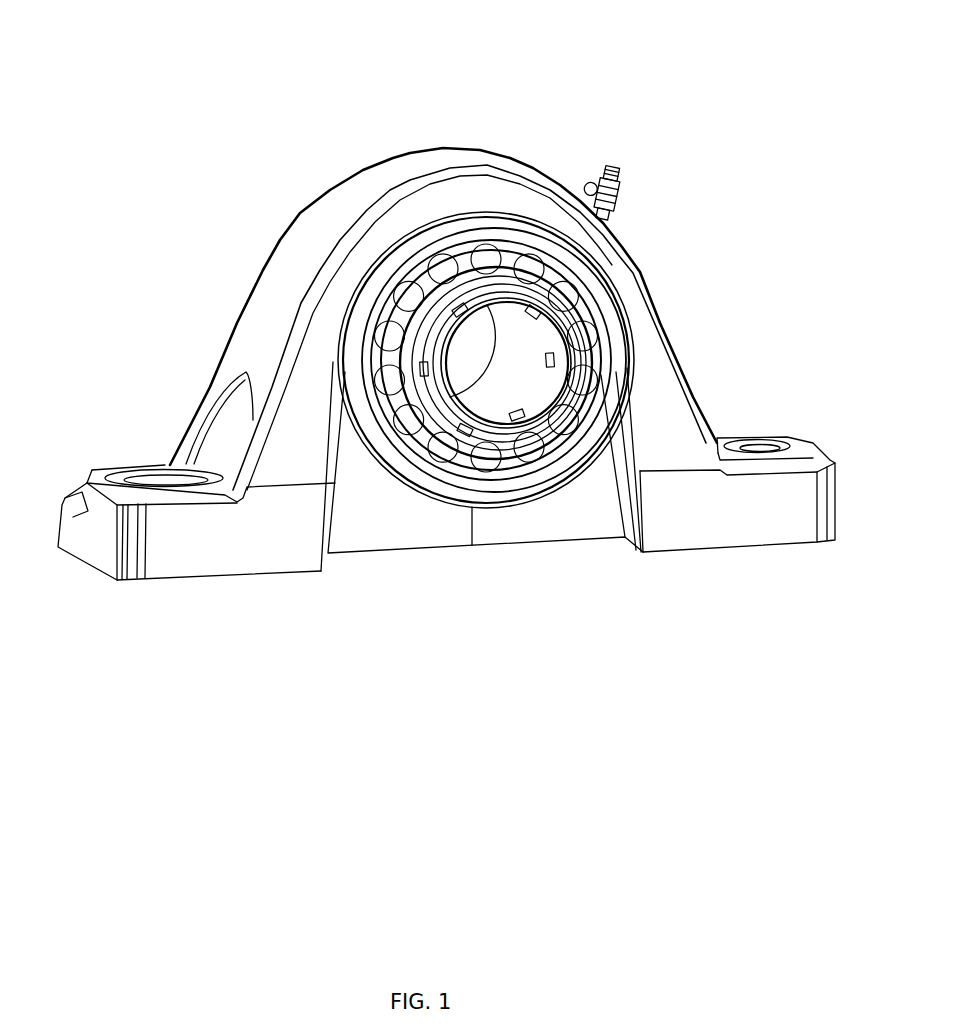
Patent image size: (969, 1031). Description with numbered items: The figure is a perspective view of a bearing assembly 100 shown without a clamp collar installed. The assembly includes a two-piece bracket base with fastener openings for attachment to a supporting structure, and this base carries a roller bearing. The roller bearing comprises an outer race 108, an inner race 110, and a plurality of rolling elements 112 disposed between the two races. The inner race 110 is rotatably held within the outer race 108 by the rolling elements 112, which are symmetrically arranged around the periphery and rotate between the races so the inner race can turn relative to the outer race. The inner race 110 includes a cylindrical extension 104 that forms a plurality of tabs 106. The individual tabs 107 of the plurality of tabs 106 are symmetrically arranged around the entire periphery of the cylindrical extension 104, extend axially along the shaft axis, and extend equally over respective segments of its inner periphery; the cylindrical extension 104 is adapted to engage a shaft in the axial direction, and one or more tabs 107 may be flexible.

The bearing assembly 100 is at (345, 205).
The cylindrical extension 104 is at (507, 383).
The plurality of tabs 106 is at (466, 232).
The tabs 107 is at (370, 272).
The outer race 108 is at (425, 503).
The inner race 110 is at (335, 230).
The rolling elements 112 is at (380, 322).